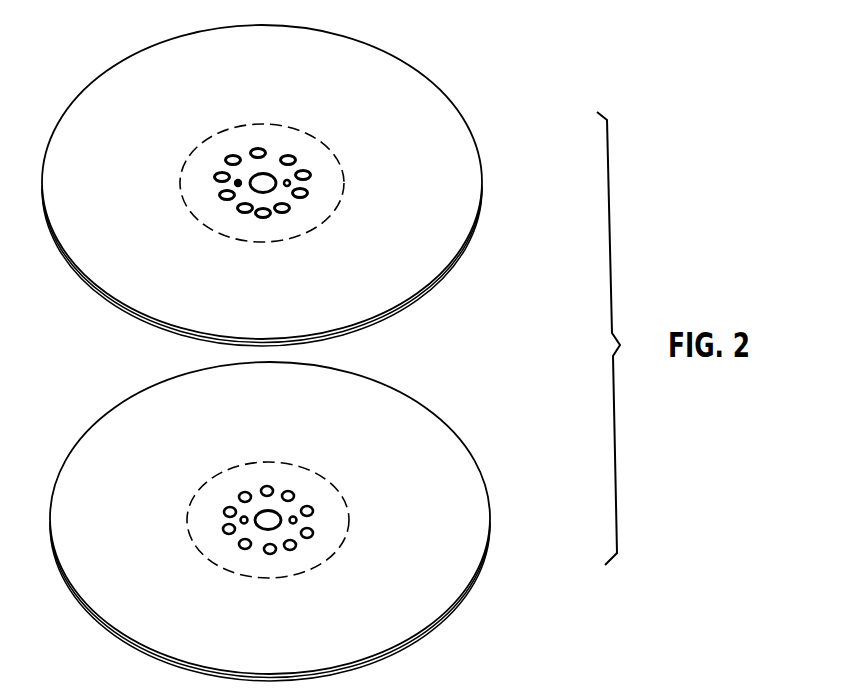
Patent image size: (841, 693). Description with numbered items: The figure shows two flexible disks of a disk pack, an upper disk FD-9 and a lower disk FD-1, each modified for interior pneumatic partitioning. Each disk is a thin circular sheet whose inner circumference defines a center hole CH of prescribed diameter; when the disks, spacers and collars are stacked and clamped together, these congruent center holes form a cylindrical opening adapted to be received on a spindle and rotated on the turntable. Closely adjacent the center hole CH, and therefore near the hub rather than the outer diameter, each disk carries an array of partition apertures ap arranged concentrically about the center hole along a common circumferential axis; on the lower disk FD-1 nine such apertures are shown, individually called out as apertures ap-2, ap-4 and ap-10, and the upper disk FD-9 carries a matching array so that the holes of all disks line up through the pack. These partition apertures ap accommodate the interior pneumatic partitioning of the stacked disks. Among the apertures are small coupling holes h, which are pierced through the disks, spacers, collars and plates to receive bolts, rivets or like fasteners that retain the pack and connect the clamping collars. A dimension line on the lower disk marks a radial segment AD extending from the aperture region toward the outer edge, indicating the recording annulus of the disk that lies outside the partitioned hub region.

The flexible disk FD-9 is at (460, 112).
The flexible disk FD-1 is at (466, 448).
The center hole CH is at (265, 174).
The coupling hole h is at (237, 181).
The partition aperture ap is at (222, 531).
The partition aperture ap-2 is at (313, 511).
The partition aperture ap-4 is at (265, 486).
The partition aperture ap-10 is at (284, 213).
The radial segment AD is at (480, 519).